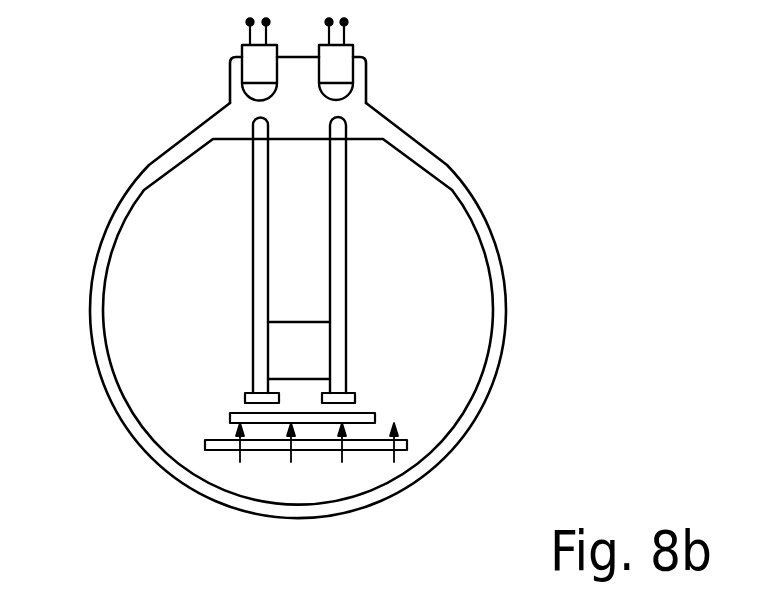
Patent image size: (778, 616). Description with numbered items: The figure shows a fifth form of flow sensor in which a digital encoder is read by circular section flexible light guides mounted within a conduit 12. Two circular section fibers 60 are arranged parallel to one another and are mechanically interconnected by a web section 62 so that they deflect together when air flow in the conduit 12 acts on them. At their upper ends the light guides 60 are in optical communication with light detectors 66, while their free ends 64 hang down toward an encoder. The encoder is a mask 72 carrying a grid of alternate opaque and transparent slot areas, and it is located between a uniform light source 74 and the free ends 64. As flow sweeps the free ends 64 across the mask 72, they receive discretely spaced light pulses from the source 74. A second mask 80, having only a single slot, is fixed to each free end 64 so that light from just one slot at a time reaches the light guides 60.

The conduit 12 is at (125, 208).
The light detectors 66 is at (251, 69).
The circular section fibers 60 is at (252, 220).
The web section 62 is at (311, 342).
The free ends 64 is at (262, 310).
The second mask 80 is at (317, 388).
The mask 72 is at (388, 410).
The uniform light source 74 is at (358, 456).